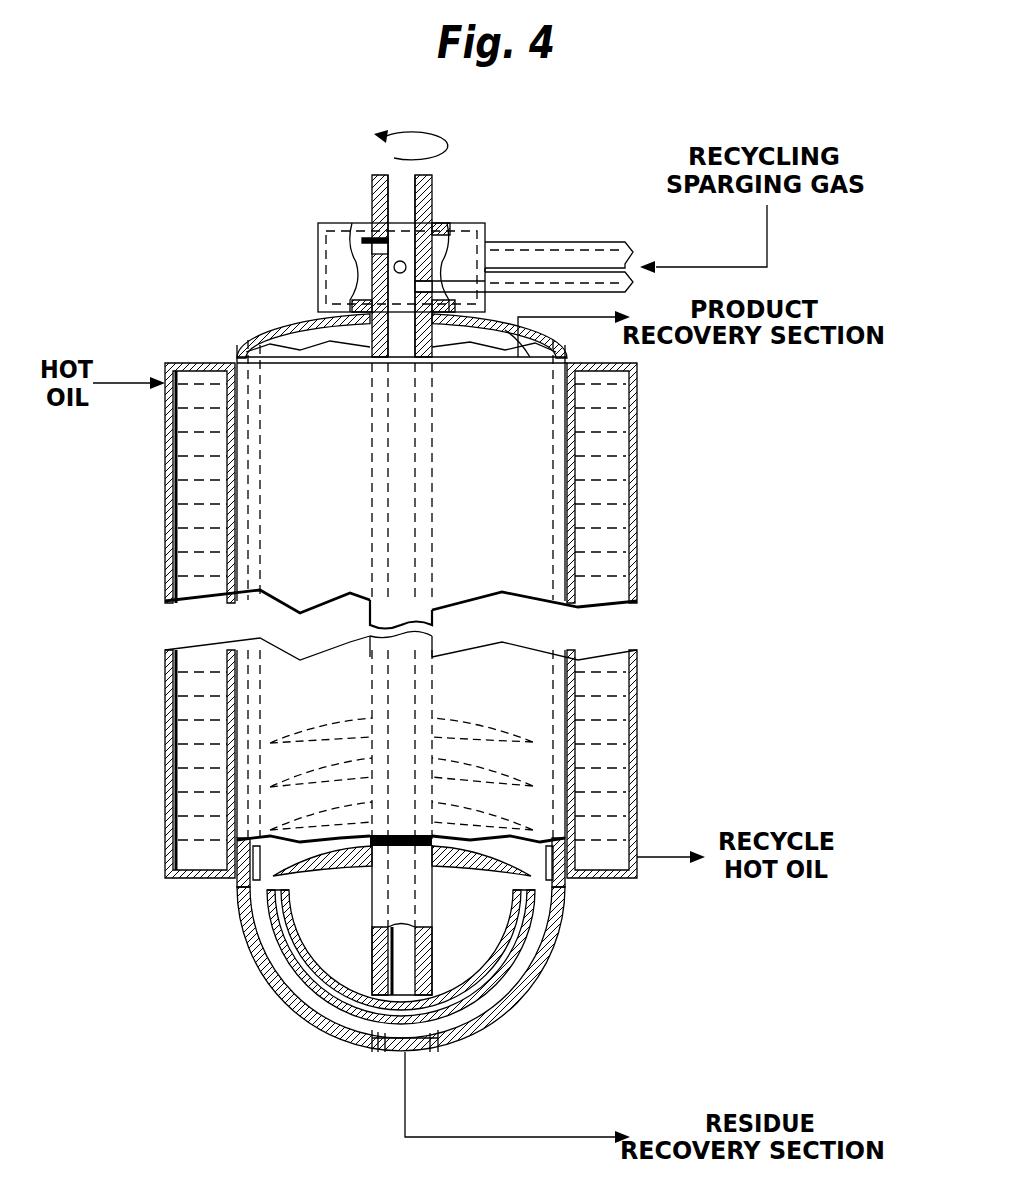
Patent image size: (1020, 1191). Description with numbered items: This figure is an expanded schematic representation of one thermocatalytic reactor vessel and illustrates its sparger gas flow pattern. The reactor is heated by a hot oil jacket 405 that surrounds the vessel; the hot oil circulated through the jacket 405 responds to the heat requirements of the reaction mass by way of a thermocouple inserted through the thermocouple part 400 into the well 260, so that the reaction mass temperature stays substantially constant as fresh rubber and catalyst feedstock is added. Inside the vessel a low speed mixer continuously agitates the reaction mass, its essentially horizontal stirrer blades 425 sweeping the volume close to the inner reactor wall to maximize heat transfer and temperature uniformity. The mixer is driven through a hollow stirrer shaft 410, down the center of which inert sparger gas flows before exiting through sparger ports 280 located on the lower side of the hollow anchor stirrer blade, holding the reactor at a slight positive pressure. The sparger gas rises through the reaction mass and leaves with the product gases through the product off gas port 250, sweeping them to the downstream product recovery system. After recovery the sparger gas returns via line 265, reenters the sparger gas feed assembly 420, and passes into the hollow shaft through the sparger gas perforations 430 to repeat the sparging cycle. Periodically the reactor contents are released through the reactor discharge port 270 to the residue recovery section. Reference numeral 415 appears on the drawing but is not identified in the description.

The product off gas port 250 is at (520, 345).
The well 260 is at (253, 488).
The line 265 is at (520, 243).
The reactor discharge port 270 is at (383, 1057).
The sparger ports 280 is at (530, 995).
The thermocouple part 400 is at (254, 345).
The hot oil jacket 405 is at (165, 452).
The hollow stirrer shaft 410 is at (403, 697).
The vessel dome cover 415 is at (296, 335).
The sparger gas feed assembly 420 is at (333, 218).
The stirrer blades 425 is at (520, 777).
The sparger gas perforations 430 is at (375, 240).